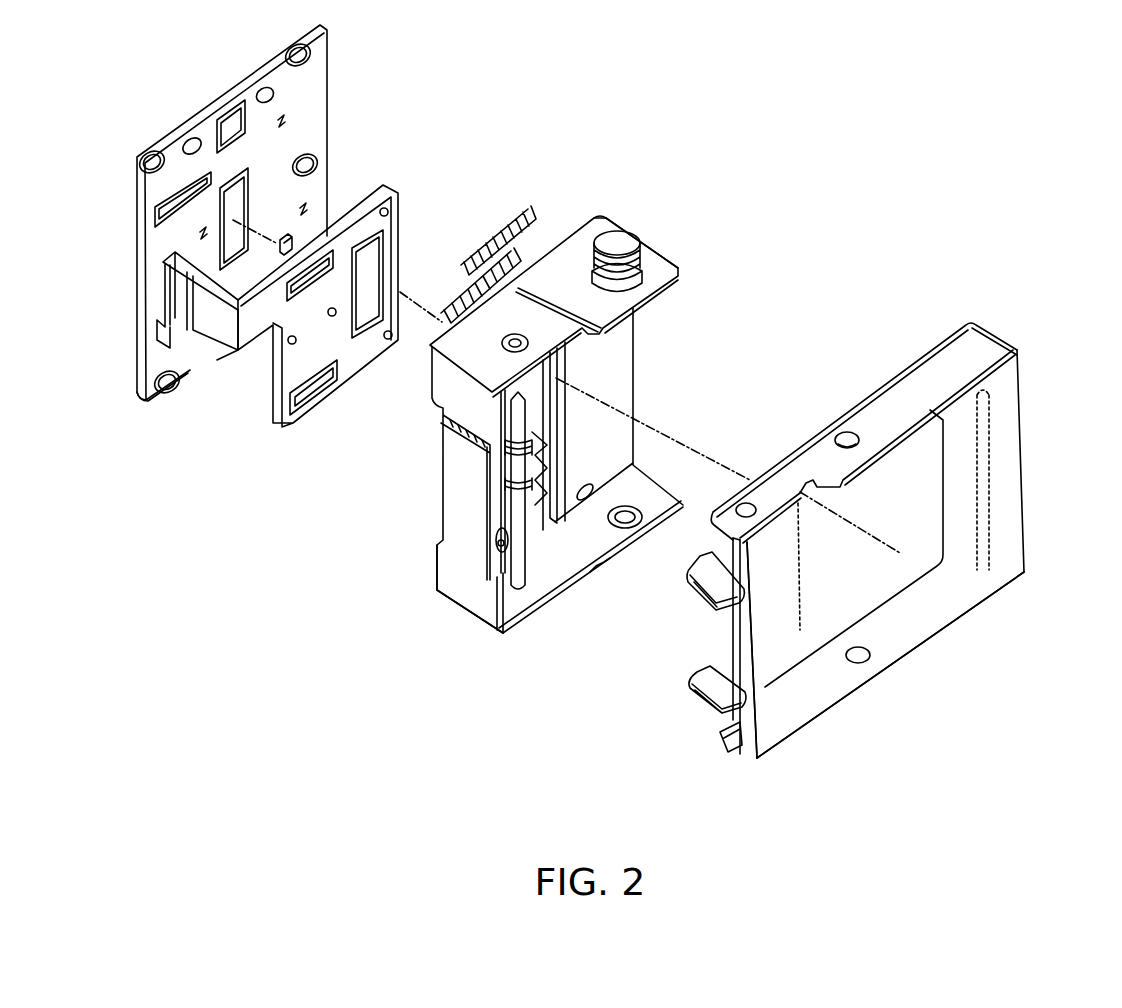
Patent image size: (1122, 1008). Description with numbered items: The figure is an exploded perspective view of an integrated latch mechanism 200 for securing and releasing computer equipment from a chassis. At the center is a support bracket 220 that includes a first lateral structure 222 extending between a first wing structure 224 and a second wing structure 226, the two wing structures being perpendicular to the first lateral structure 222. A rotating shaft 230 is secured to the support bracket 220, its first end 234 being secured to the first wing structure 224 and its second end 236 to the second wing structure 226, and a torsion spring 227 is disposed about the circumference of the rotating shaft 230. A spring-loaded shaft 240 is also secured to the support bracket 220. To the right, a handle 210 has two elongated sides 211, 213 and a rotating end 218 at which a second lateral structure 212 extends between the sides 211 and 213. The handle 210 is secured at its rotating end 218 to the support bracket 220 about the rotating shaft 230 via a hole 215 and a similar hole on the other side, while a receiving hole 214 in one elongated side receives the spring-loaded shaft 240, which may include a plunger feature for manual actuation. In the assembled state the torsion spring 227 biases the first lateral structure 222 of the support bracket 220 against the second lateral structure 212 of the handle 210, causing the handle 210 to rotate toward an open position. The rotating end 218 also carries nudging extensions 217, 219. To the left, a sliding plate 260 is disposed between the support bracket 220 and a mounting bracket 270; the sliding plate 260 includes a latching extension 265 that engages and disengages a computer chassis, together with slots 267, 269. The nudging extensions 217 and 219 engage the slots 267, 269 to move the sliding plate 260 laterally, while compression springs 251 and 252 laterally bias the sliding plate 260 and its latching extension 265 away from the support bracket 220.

The integrated latch mechanism 200 is at (885, 132).
The handle 210 is at (860, 556).
The elongated side 211 is at (930, 373).
The second lateral structure 212 is at (775, 685).
The elongated side 213 is at (932, 612).
The receiving hole 214 is at (847, 432).
The hole 215 is at (746, 503).
The nudging extension 217 is at (710, 600).
The rotating end 218 is at (787, 762).
The nudging extension 219 is at (696, 688).
The support bracket 220 is at (546, 433).
The first lateral structure 222 is at (483, 535).
The first wing structure 224 is at (668, 277).
The second wing structure 226 is at (607, 553).
The torsion spring 227 is at (568, 478).
The rotating shaft 230 is at (552, 540).
The first end 234 is at (502, 478).
The second end 236 is at (530, 590).
The spring-loaded shaft 240 is at (625, 243).
The compression spring 251 is at (518, 256).
The compression spring 252 is at (537, 210).
The sliding plate 260 is at (313, 324).
The latching extension 265 is at (204, 314).
The slot 267 is at (327, 395).
The slot 269 is at (305, 287).
The mounting bracket 270 is at (328, 97).